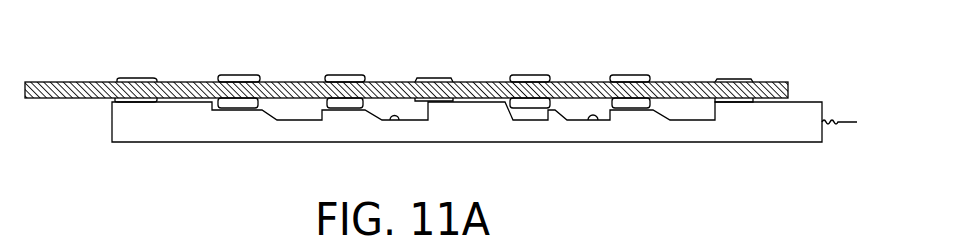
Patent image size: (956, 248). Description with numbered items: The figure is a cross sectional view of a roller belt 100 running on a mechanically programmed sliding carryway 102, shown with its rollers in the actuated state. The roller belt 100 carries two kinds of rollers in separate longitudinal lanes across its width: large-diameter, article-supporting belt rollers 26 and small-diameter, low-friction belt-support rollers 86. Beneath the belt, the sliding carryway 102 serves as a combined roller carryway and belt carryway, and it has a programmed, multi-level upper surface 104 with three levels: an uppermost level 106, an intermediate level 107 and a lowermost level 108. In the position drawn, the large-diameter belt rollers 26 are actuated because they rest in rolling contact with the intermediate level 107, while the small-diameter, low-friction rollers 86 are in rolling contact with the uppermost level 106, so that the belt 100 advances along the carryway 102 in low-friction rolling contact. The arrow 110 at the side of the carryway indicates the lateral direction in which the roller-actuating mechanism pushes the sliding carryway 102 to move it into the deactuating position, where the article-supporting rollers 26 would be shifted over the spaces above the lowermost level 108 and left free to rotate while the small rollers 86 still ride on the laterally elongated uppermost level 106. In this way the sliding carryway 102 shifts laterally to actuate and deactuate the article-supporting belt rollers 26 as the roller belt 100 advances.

The article-supporting belt rollers 26 is at (525, 77).
The belt-support rollers 86 is at (135, 78).
The roller belt 100 is at (175, 84).
The sliding carryway 102 is at (491, 137).
The upper surface 104 is at (678, 120).
The uppermost level 106 is at (213, 103).
The intermediate level 107 is at (268, 85).
The lowermost level 108 is at (399, 120).
The arrow 110 is at (835, 122).